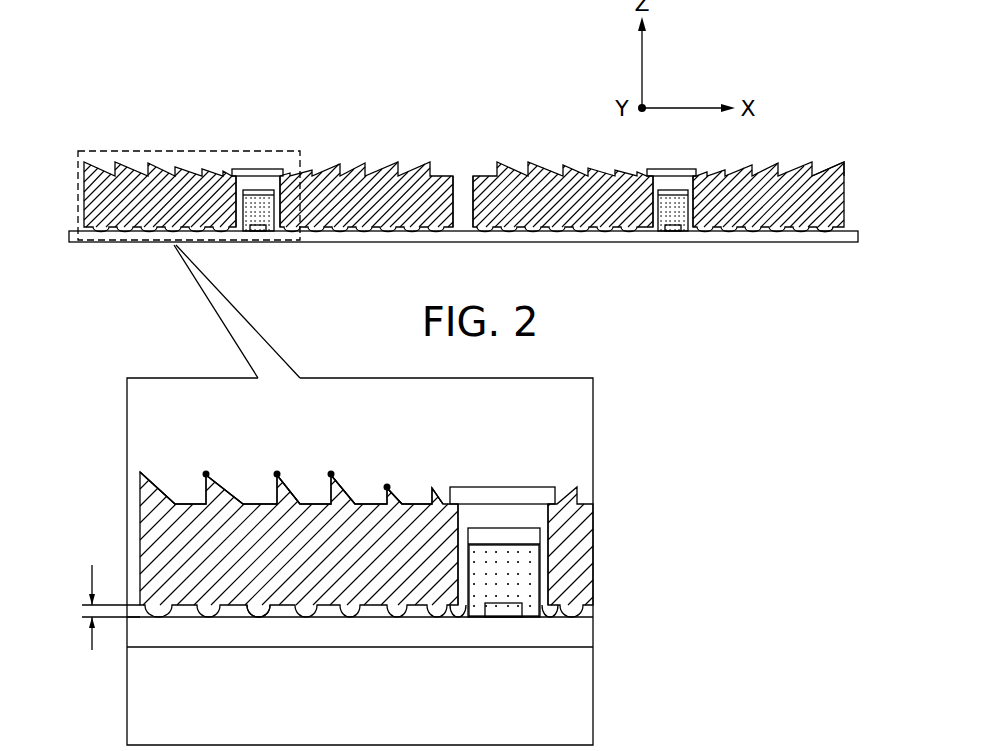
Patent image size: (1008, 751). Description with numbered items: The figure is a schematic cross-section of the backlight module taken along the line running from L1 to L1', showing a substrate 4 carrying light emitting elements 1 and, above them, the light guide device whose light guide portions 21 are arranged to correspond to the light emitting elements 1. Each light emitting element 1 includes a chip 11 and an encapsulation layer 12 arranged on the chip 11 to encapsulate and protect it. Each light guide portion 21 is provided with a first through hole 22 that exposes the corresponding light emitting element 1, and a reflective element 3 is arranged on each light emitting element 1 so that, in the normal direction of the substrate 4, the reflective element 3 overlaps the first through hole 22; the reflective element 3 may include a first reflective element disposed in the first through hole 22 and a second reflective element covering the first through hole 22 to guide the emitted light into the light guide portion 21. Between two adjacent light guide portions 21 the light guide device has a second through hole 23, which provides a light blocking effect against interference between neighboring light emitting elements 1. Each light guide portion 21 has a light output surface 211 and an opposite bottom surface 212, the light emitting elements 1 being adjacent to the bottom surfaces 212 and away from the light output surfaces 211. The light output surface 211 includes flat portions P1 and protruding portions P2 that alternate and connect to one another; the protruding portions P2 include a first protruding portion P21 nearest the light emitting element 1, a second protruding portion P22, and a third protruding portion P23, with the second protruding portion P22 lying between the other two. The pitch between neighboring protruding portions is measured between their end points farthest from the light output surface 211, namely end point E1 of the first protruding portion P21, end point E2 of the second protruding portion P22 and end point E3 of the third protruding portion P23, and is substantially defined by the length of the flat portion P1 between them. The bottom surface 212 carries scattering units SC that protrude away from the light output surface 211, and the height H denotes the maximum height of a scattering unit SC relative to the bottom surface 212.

The light guide portion 21 is at (97, 198).
The light output surface 211 is at (818, 176).
The bottom surface 212 is at (821, 231).
The first through hole 22 is at (275, 228).
The second through hole 23 is at (464, 217).
The substrate 4 is at (708, 233).
The line L1 is at (77, 268).
The line L1' is at (846, 268).
The reflective element 3 is at (507, 496).
The light emitting element 1 is at (483, 684).
The chip 11 is at (492, 609).
The encapsulation layer 12 is at (527, 592).
The flat portion P1 is at (187, 509).
The protruding portion P2 is at (152, 421).
The first protruding portion P21 is at (395, 497).
The second protruding portion P22 is at (290, 491).
The third protruding portion P23 is at (166, 495).
The end point E1 is at (372, 475).
The end point E2 is at (287, 472).
The end point E3 is at (190, 472).
The height H is at (102, 607).
The scattering unit SC is at (258, 618).